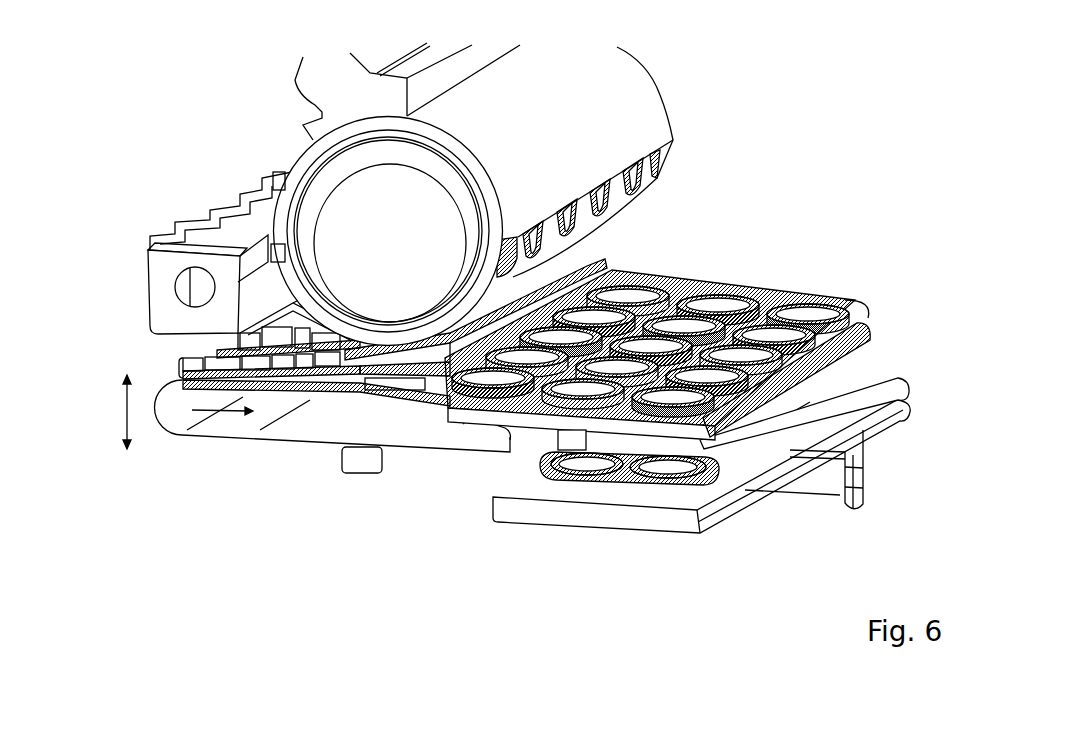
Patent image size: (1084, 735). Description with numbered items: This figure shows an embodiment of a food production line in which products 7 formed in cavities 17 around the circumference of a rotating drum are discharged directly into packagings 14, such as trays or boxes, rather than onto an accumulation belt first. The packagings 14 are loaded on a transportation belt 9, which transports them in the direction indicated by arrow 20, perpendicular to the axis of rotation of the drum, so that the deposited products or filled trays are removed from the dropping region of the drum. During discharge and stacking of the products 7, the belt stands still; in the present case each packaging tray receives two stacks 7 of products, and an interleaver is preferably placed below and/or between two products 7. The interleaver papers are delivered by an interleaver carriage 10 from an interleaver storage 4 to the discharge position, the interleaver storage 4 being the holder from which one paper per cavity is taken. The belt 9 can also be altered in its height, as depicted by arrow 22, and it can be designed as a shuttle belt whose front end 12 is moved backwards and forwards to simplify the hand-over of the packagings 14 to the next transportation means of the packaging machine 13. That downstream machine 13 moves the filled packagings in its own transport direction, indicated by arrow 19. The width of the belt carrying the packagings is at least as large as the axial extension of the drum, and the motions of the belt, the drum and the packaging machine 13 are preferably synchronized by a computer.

The interleaver storage 4 is at (150, 327).
The product 7 is at (722, 295).
The transportation belt 9 is at (843, 344).
The interleaver carriage 10 is at (355, 368).
The front end of belt 12 is at (870, 332).
The packaging machine / transportation means 13 is at (460, 551).
The packaging 14 is at (843, 307).
The cavity 17 is at (636, 179).
The transport direction of the packaging machine 19 is at (790, 405).
The transport direction of the belt 20 is at (247, 397).
The shifting direction 22 is at (125, 412).